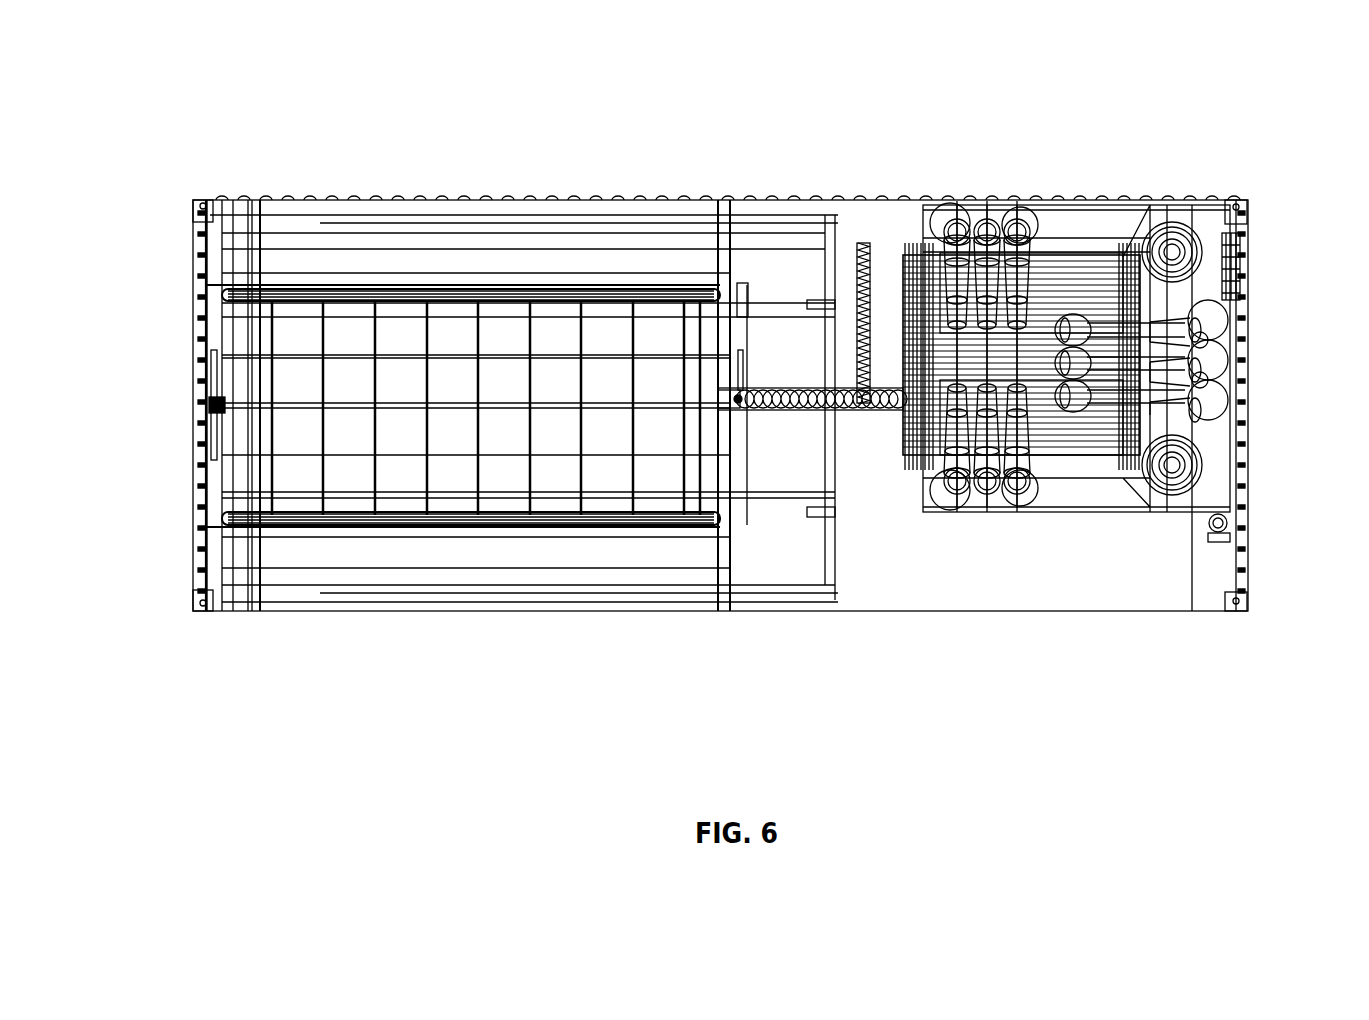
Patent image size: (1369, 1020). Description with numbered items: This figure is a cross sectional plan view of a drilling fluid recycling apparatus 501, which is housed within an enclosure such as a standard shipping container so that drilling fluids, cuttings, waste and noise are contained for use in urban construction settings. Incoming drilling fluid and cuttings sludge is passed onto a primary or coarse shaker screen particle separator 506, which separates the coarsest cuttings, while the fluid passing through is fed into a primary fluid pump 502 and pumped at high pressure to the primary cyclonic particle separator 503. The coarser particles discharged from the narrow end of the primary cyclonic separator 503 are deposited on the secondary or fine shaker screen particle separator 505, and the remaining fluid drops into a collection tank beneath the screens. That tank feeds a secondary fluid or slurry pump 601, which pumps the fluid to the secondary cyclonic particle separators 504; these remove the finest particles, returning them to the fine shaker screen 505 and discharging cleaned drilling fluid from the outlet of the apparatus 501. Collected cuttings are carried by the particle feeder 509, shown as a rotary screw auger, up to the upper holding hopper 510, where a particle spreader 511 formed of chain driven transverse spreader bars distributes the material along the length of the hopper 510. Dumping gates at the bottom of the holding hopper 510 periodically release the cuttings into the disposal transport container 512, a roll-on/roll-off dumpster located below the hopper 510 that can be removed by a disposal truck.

The drilling fluid recycling apparatus 501 is at (634, 198).
The primary fluid pump 502 is at (1200, 465).
The primary cyclonic particle separator 503 is at (1185, 355).
The secondary cyclonic particle separator 504 is at (1015, 240).
The secondary or fine shaker screen particle separator 505 is at (1099, 360).
The primary or coarse shaker screen particle separator 506 is at (1135, 237).
The particle feeder 509 is at (850, 422).
The upper holding hopper 510 is at (636, 545).
The particle spreader 511 is at (453, 508).
The disposal transport container 512 is at (393, 604).
The secondary fluid or slurry pump 601 is at (1248, 228).